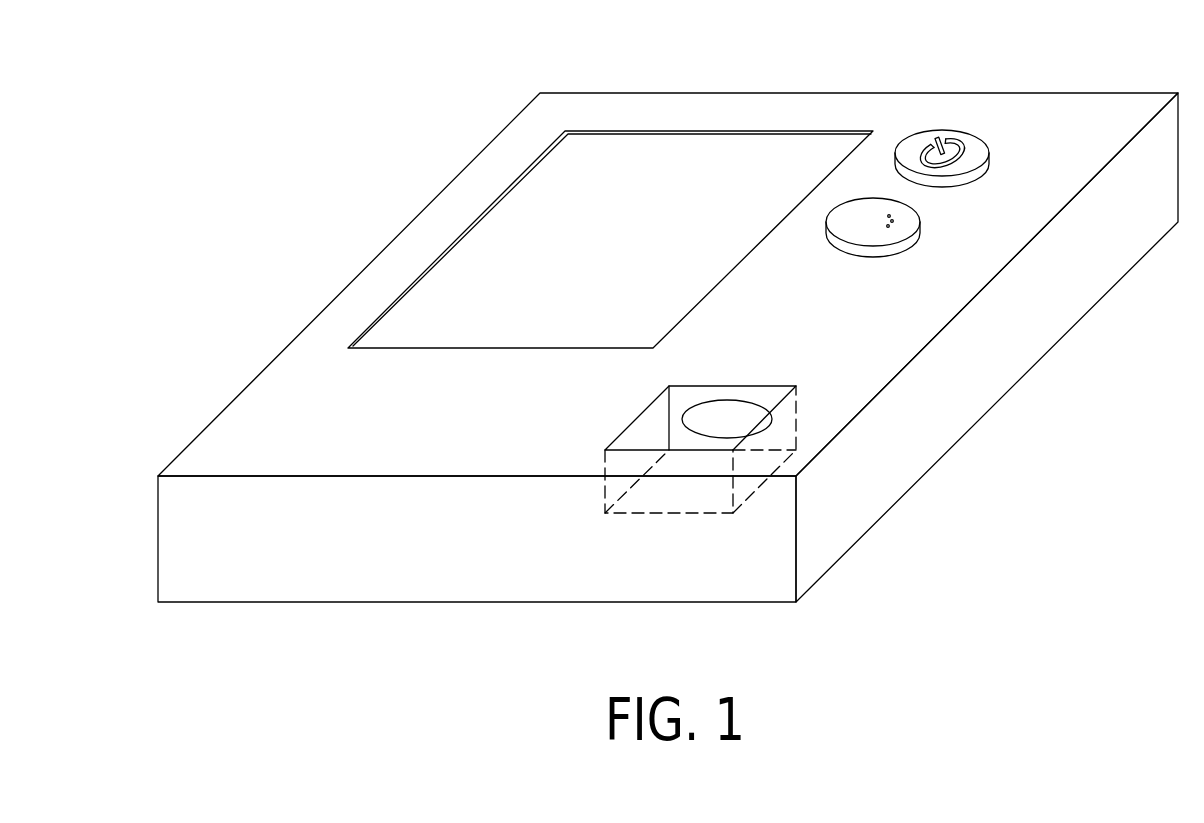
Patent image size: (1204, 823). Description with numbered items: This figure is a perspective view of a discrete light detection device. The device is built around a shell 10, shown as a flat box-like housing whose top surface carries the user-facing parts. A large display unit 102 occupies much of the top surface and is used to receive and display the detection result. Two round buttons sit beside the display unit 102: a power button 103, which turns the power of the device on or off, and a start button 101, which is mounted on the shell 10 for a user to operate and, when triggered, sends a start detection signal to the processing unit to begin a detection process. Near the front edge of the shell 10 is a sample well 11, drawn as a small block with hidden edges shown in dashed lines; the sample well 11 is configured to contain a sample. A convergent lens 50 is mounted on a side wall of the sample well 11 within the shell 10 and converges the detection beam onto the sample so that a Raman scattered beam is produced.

The shell 10 is at (565, 107).
The display unit 102 is at (455, 267).
The power button 103 is at (978, 143).
The start button 101 is at (853, 240).
The sample well 11 is at (640, 427).
The convergent lens 50 is at (745, 415).